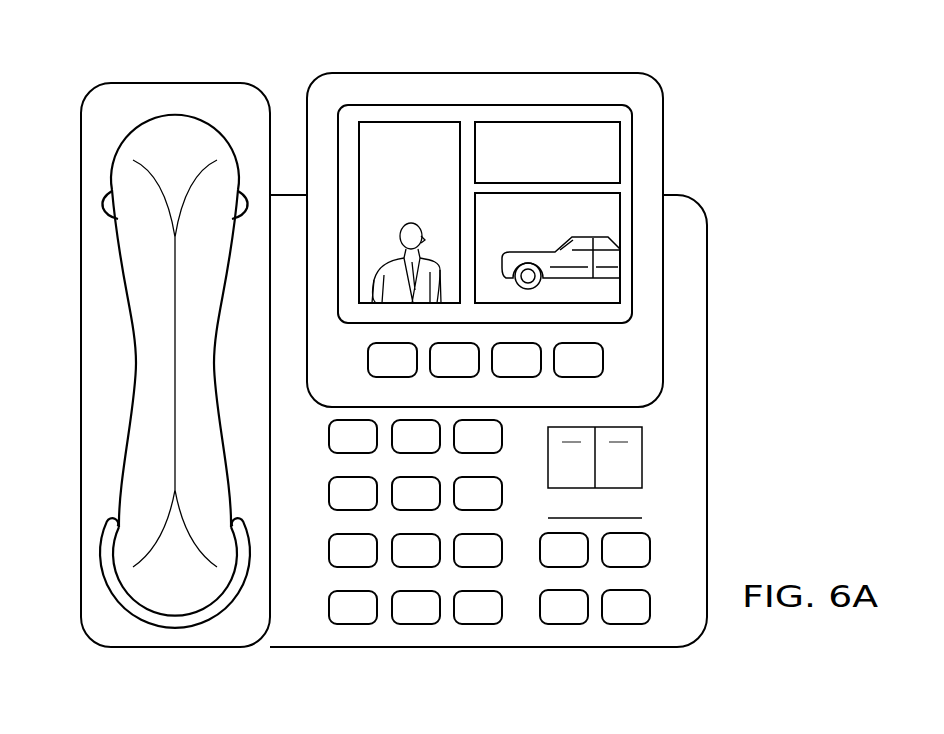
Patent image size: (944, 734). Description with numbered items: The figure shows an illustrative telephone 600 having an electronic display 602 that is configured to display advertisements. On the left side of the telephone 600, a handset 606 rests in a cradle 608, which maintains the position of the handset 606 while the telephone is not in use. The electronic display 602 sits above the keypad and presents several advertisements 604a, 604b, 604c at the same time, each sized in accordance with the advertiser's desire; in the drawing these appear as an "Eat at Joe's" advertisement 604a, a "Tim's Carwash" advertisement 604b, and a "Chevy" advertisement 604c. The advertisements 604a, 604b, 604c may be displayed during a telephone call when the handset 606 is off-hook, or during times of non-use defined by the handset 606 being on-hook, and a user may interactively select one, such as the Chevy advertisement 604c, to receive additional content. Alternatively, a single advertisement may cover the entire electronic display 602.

The telephone 600 is at (740, 440).
The electronic display 602 is at (670, 113).
The advertisement 604a is at (412, 122).
The advertisement 604b is at (560, 122).
The advertisement 604c is at (620, 218).
The handset 606 is at (167, 114).
The cradle 608 is at (112, 192).